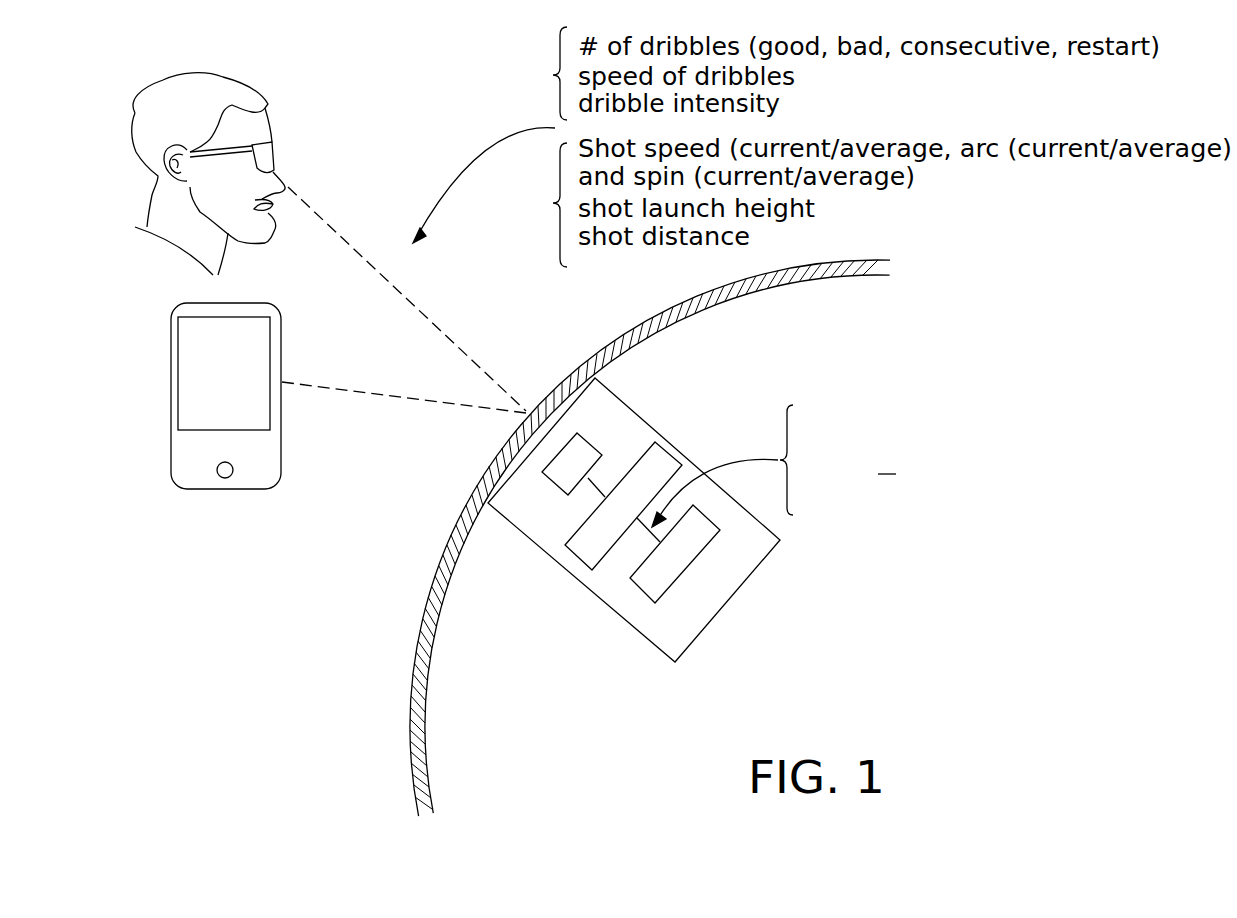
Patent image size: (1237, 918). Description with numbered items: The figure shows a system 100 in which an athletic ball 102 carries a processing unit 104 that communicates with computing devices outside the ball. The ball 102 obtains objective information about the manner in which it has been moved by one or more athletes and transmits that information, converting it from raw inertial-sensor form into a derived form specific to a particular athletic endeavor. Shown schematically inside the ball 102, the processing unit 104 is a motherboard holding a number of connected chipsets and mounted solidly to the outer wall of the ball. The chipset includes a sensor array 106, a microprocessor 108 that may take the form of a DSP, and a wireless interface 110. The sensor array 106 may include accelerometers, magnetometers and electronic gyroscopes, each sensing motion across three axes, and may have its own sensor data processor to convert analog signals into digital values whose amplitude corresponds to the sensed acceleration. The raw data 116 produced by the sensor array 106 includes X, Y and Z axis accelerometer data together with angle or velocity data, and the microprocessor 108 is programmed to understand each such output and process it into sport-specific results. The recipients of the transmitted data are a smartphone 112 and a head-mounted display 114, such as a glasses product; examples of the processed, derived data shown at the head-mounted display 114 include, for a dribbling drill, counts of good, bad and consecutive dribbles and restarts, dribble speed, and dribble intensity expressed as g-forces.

The system 100 is at (296, 628).
The athletic ball 102 is at (427, 600).
The processing unit 104 is at (590, 592).
The sensor array 106 is at (670, 588).
The microprocessor 108 is at (670, 450).
The wireless interface 110 is at (592, 443).
The smartphone 112 is at (170, 367).
The head-mounted display 114 is at (152, 118).
The raw data 116 is at (867, 406).